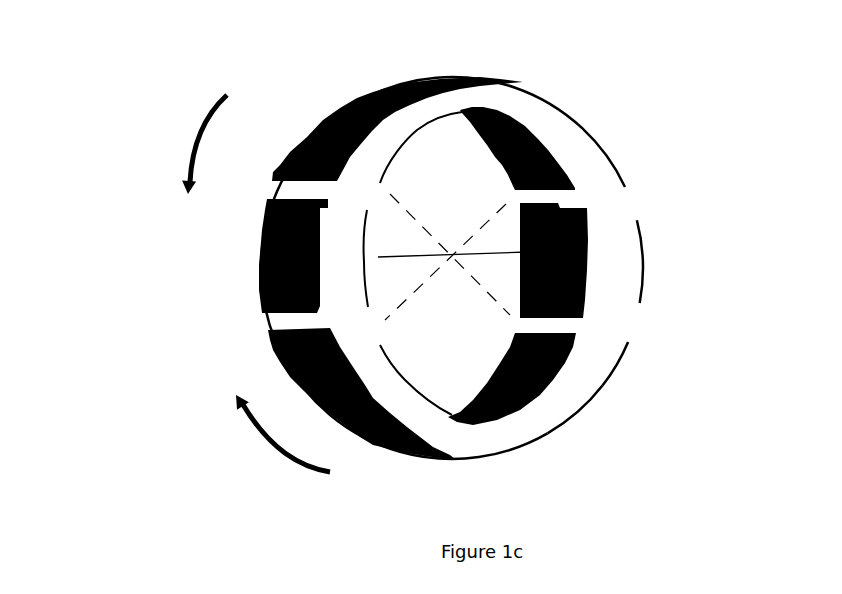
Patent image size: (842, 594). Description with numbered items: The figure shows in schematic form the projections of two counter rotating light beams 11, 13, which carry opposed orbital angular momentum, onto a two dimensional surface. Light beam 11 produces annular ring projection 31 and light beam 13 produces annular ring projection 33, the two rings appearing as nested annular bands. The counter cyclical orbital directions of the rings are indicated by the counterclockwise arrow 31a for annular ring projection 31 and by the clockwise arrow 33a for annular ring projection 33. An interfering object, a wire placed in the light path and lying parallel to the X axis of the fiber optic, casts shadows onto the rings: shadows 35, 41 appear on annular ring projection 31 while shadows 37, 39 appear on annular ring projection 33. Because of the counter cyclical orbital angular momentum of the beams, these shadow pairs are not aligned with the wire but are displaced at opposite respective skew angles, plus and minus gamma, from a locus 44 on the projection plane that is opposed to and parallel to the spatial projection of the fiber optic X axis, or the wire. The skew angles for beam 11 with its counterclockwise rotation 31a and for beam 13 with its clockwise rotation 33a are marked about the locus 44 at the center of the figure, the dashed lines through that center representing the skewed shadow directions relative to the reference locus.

The light beam 11 is at (318, 112).
The light beam 13 is at (590, 415).
The annular ring projection 31 is at (353, 90).
The counterclockwise arrow 31a is at (197, 140).
The annular ring projection 33 is at (623, 373).
The clockwise arrow 33a is at (258, 433).
The shadow 35 is at (277, 318).
The shadow 37 is at (273, 190).
The shadow 39 is at (628, 327).
The shadow 41 is at (637, 200).
The locus 44 is at (450, 257).